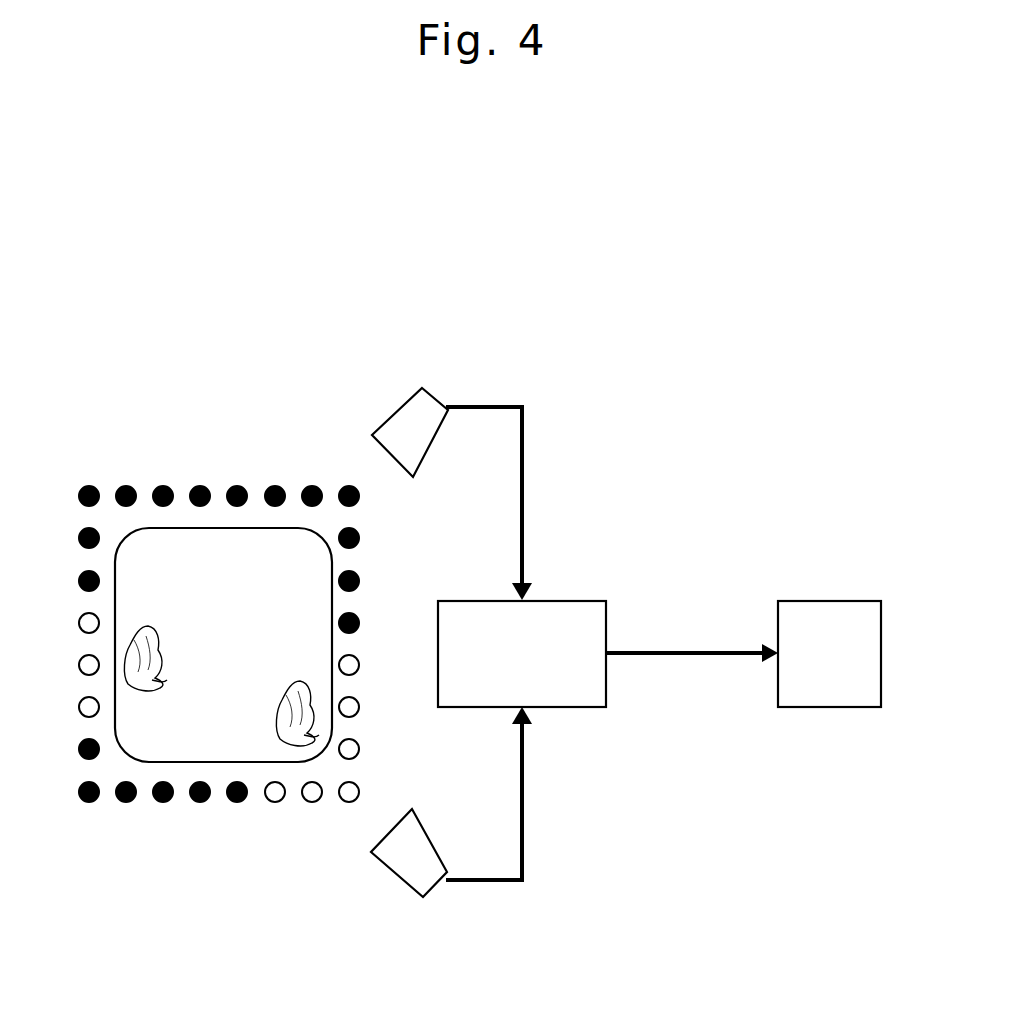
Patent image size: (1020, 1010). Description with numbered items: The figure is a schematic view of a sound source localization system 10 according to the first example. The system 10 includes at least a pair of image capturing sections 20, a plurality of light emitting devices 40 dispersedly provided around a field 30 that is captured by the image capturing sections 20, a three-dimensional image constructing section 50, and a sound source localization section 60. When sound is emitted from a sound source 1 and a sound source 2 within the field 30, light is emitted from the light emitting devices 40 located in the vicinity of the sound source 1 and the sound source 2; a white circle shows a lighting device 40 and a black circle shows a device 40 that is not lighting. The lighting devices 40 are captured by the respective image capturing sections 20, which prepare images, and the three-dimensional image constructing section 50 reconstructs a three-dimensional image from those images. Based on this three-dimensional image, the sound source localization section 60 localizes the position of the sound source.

The sound source 1 is at (148, 623).
The sound source 2 is at (308, 683).
The sound source localization system 10 is at (709, 486).
The image capturing section 20 is at (398, 425).
The field 30 is at (173, 743).
The light emitting device 40 is at (125, 488).
The three-dimensional image constructing section 50 is at (568, 708).
The sound source localization section 60 is at (845, 708).